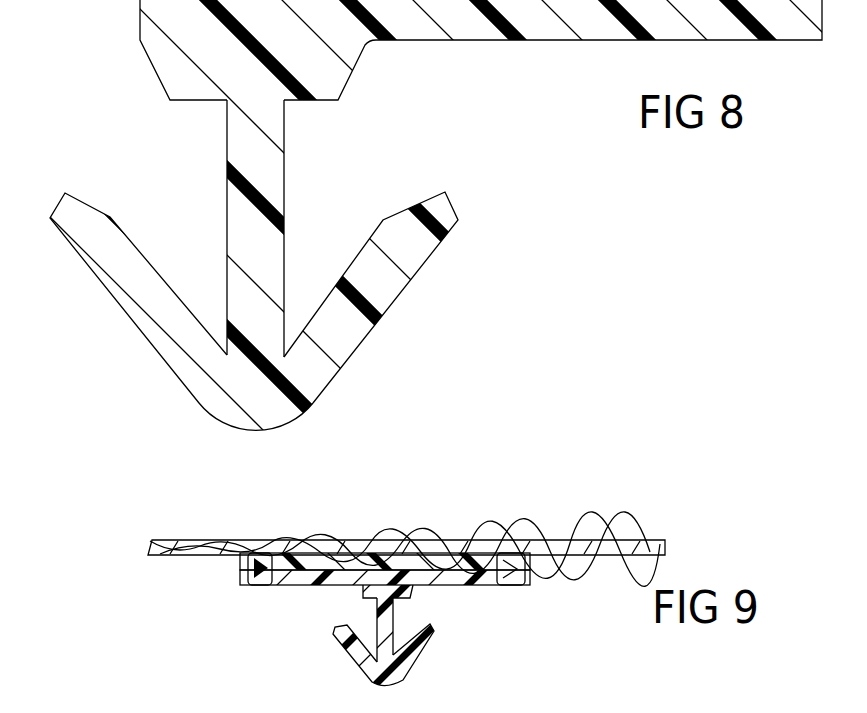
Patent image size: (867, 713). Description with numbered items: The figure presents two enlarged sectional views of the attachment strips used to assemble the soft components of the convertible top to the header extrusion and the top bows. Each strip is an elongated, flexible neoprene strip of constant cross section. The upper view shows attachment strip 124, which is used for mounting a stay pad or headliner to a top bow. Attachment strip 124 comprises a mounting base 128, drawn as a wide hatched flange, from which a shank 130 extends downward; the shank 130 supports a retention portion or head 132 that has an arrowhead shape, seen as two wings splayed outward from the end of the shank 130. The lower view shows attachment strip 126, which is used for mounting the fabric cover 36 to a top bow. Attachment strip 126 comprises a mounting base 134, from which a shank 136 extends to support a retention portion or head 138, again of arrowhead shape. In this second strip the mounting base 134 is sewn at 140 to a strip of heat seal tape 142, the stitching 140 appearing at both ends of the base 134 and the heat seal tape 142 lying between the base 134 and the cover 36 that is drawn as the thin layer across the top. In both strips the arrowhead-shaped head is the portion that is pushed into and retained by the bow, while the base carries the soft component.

In FIG. 8, the attachment strip 124 is at (433, 225).
In FIG. 8, the mounting base 128 is at (476, 32).
In FIG. 8, the shank 130 is at (273, 181).
In FIG. 8, the retention portion or head 132 is at (357, 333).
In FIG. 9, the cover 36 is at (586, 549).
In FIG. 9, the attachment strip 126 is at (369, 631).
In FIG. 9, the mounting base 134 is at (460, 580).
In FIG. 9, the shank 136 is at (398, 614).
In FIG. 9, the retention portion or head 138 is at (418, 660).
In FIG. 9, the sewing 140 is at (259, 587).
In FIG. 9, the heat seal tape 142 is at (450, 560).